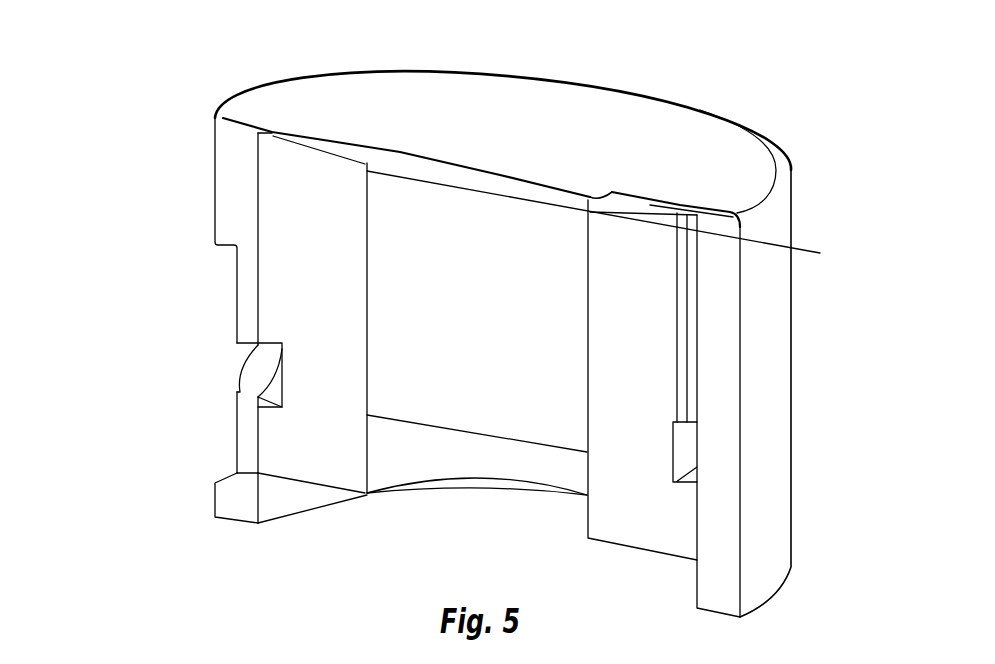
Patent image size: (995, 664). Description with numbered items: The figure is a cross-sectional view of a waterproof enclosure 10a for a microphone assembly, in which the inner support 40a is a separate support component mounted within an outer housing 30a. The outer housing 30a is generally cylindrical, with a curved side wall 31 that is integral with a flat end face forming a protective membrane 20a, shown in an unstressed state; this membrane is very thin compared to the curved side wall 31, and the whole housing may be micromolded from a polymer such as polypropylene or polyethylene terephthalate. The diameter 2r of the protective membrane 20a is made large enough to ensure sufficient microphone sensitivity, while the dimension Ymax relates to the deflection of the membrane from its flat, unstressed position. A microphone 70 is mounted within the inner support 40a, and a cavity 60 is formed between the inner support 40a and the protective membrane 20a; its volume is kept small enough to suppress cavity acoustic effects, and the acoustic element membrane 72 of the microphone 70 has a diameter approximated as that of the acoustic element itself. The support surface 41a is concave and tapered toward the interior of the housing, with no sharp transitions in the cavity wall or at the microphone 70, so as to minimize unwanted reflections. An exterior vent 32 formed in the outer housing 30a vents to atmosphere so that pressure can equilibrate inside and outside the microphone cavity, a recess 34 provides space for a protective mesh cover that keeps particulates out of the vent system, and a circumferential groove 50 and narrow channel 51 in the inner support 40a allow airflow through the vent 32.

The waterproof enclosure 10a is at (217, 92).
The protective membrane 20a is at (678, 127).
The protective membrane diameter 2r is at (677, 198).
The maximum membrane deflection Ymax is at (808, 254).
The cavity 60 is at (297, 140).
The support member surface 41a is at (322, 155).
The acoustic element membrane 72 is at (500, 198).
The recess 34 is at (235, 431).
The exterior vent 32 is at (247, 362).
The outer housing 30a is at (215, 517).
The microphone 70 is at (437, 405).
The inner support 40a is at (585, 528).
The narrow channel 51 is at (680, 340).
The circumferential groove 50 is at (683, 455).
The curved side wall 31 is at (762, 393).